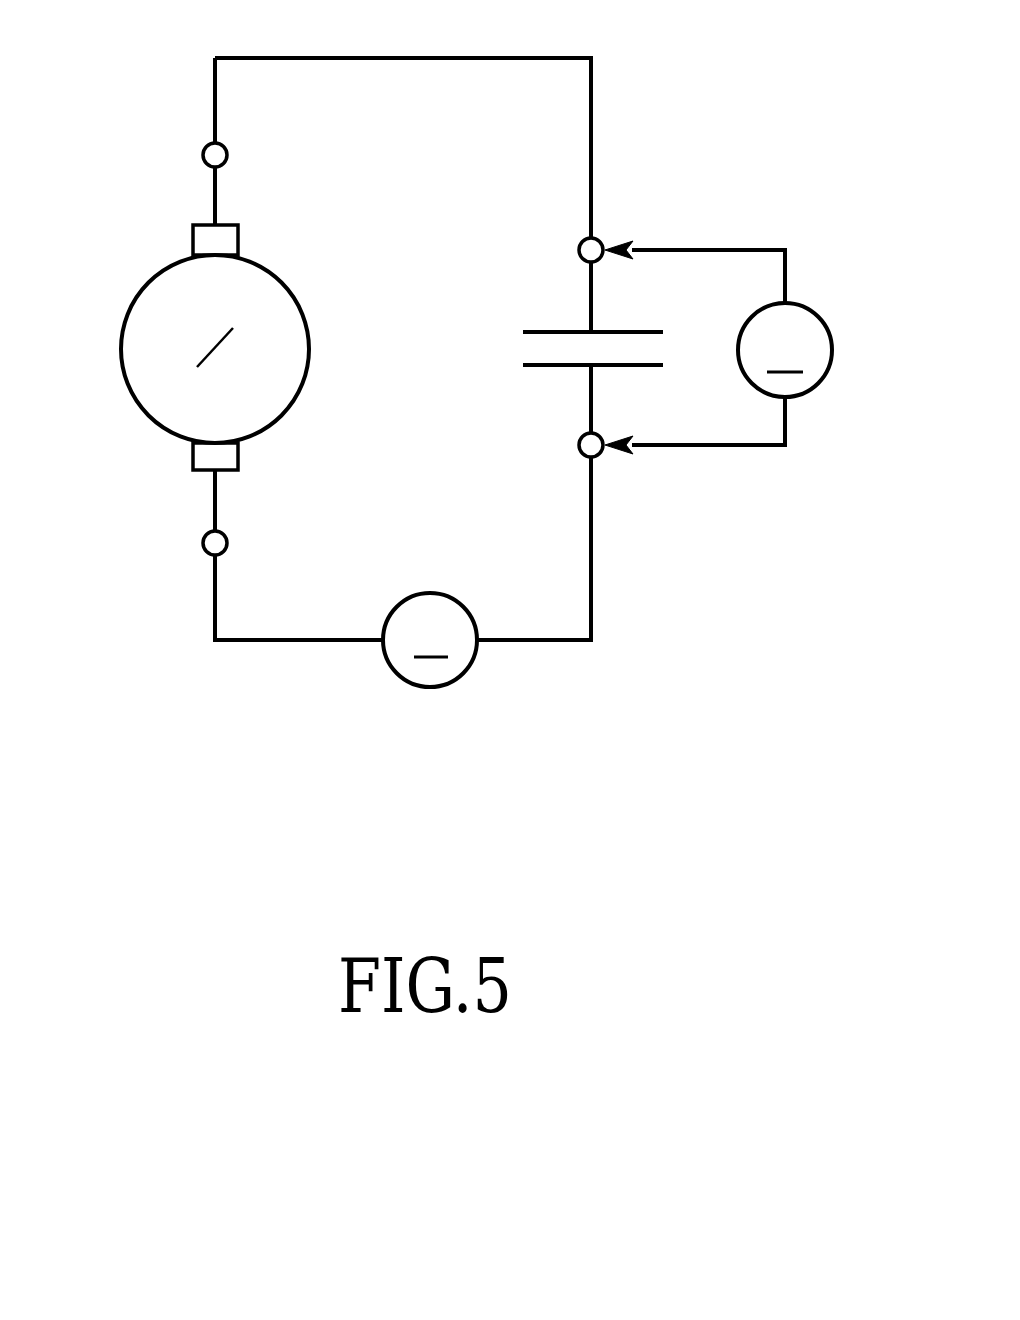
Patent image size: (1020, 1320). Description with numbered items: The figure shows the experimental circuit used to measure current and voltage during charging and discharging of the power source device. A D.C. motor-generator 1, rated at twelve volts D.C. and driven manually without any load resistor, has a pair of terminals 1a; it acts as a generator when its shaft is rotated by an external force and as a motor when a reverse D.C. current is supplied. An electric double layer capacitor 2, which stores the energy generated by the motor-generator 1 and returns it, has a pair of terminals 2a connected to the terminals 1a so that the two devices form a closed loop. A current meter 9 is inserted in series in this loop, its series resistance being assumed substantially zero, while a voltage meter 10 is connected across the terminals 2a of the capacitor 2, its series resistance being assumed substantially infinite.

The D.C. motor-generator 1 is at (117, 350).
The terminals of the D.C. motor-generator 1a is at (202, 153).
The electric double layer capacitor 2 is at (628, 332).
The terminals of the electric double layer capacitor 2a is at (576, 250).
The current meter 9 is at (430, 688).
The voltage meter 10 is at (833, 353).